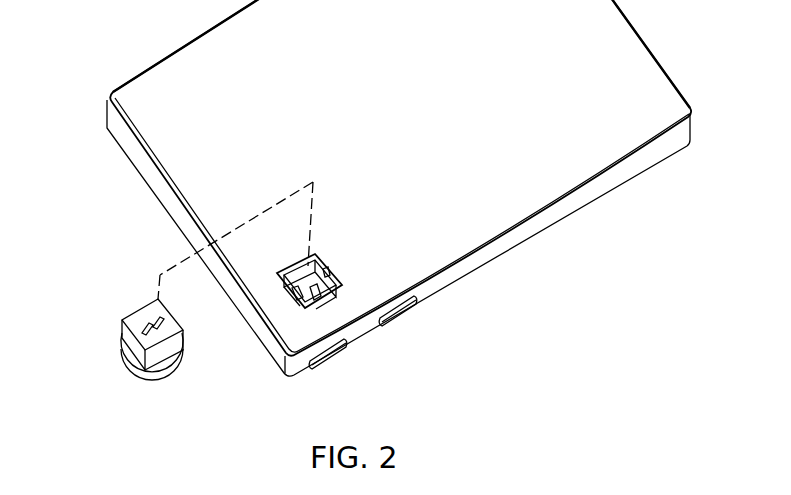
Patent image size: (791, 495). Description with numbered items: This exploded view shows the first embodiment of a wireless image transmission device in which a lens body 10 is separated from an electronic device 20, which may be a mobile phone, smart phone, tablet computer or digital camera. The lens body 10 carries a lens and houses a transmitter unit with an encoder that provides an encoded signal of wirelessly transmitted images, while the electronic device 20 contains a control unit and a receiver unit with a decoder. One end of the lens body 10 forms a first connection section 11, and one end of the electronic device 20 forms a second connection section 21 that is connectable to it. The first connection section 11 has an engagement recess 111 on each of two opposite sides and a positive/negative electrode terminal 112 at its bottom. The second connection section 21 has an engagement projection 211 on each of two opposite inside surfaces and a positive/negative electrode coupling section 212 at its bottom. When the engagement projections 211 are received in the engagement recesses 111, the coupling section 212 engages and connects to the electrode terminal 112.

The lens body 10 is at (145, 378).
The first connection section 11 is at (105, 332).
The engagement recess 111 is at (135, 352).
The positive/negative electrode terminal 112 is at (143, 326).
The electronic device 20 is at (175, 165).
The second connection section 21 is at (349, 340).
The engagement projection 211 is at (332, 278).
The positive/negative electrode coupling section 212 is at (320, 298).